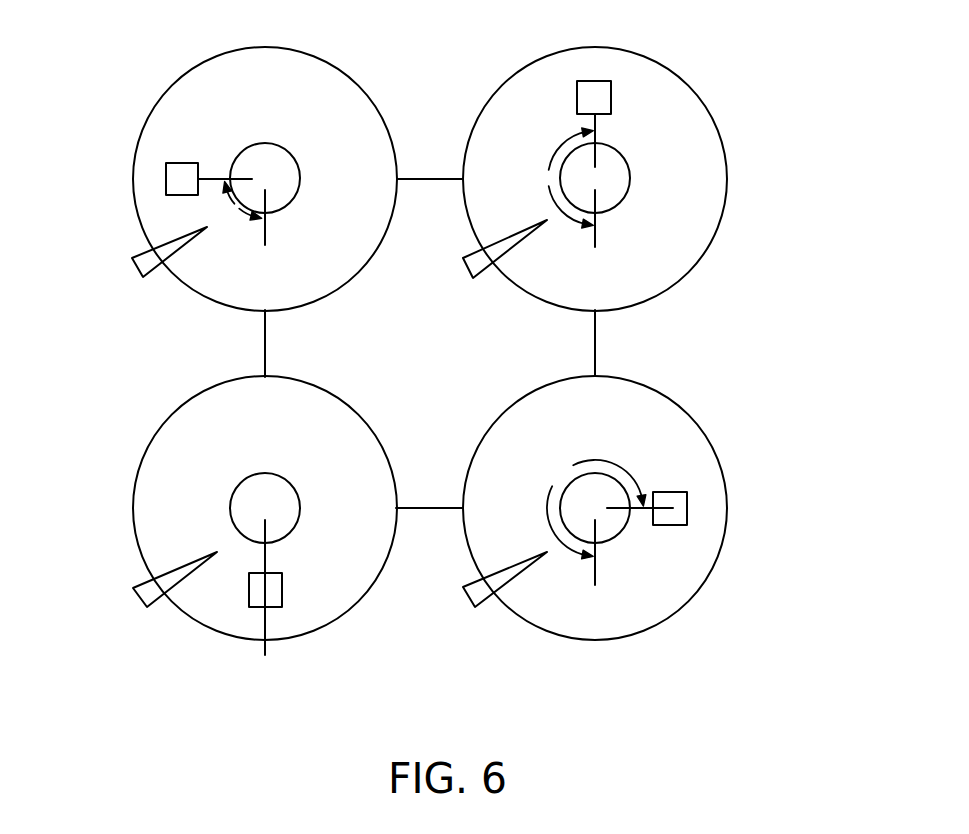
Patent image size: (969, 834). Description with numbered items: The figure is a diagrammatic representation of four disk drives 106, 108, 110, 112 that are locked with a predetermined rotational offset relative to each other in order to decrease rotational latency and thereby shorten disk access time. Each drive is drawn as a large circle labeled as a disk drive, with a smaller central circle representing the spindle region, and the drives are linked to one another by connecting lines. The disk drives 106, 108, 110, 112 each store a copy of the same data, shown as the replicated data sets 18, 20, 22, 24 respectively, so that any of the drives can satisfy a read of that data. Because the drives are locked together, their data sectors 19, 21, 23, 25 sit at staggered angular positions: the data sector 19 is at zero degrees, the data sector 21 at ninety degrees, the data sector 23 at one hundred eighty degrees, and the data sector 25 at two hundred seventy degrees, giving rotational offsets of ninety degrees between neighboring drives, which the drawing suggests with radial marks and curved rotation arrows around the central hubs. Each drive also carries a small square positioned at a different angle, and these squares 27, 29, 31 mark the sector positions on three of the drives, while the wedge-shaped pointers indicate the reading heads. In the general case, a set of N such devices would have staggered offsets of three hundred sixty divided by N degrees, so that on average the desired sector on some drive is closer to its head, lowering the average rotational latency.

The replicated data set 18 is at (355, 147).
The replicated data set 20 is at (670, 130).
The replicated data set 22 is at (685, 450).
The replicated data set 24 is at (355, 458).
The data sector 19 is at (266, 603).
The data sector 21 is at (244, 208).
The data sector 23 is at (556, 178).
The data sector 25 is at (593, 505).
The read/write head 27 is at (267, 590).
The read/write head 29 is at (183, 178).
The read/write head 31 is at (595, 97).
The disk drive 106 is at (132, 182).
The disk drive 108 is at (727, 180).
The disk drive 110 is at (727, 508).
The disk drive 112 is at (132, 508).